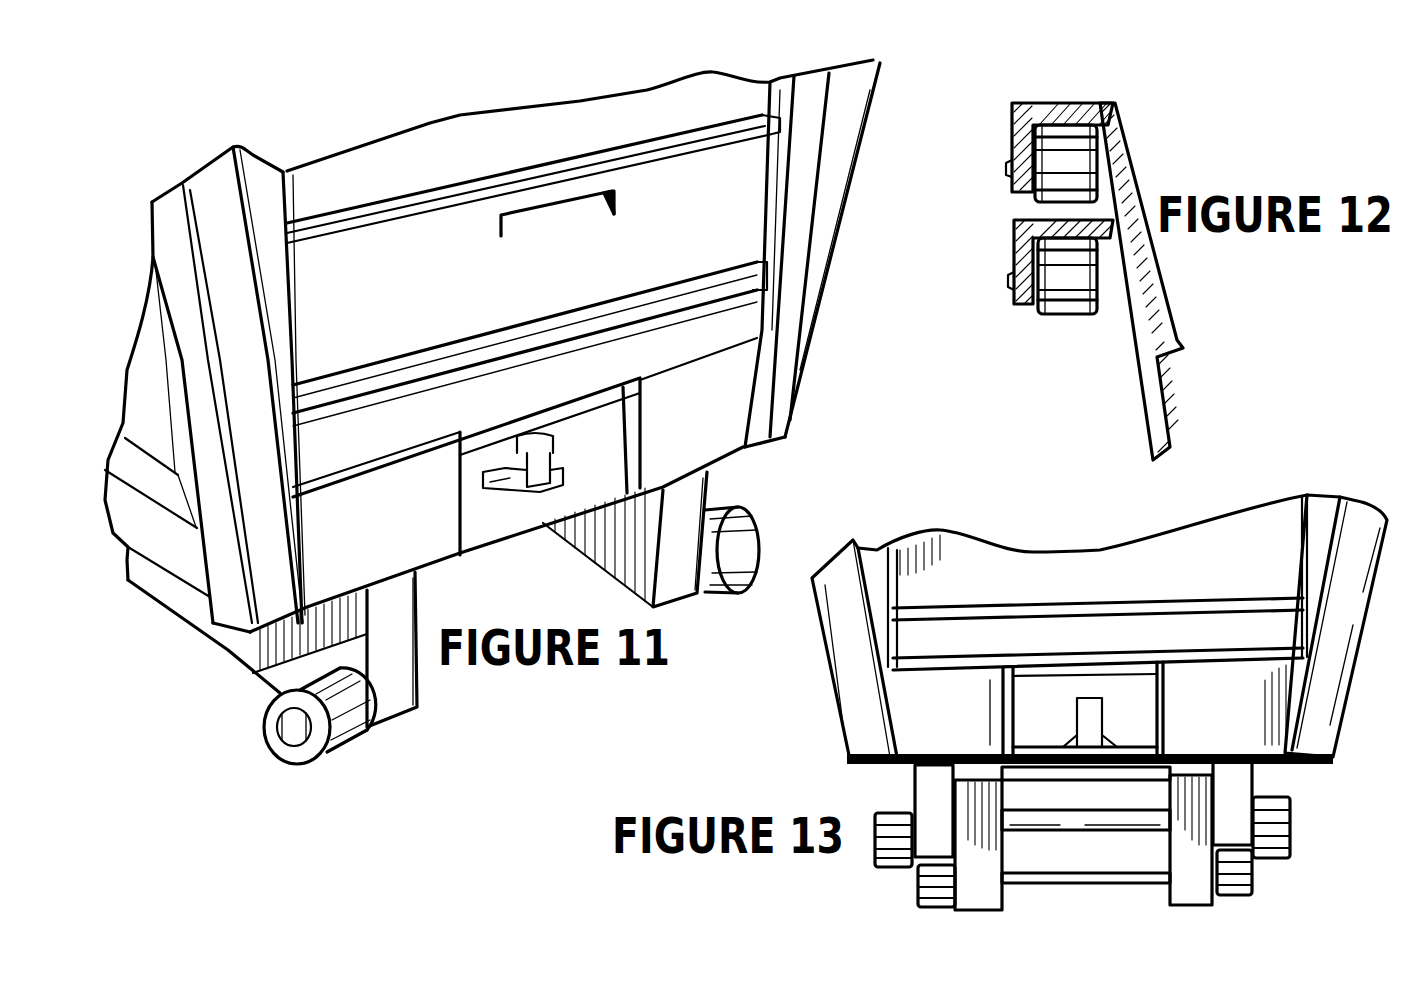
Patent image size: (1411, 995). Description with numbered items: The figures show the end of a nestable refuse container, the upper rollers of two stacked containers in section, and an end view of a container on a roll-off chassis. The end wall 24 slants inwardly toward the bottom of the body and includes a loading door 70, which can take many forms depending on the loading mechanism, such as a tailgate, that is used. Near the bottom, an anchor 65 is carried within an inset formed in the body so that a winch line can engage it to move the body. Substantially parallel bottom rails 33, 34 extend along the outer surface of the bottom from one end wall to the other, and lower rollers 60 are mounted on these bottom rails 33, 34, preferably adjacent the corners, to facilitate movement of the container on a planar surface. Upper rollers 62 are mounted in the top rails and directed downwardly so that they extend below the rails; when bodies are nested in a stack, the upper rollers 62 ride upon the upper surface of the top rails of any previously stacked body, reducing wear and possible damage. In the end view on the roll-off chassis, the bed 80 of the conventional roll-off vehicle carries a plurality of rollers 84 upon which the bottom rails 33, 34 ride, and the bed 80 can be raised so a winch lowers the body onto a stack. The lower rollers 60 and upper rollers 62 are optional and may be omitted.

In FIG. 11, the end wall 24 is at (344, 170).
In FIG. 11, the loading door 70 is at (433, 227).
In FIG. 11, the anchor 65 is at (483, 480).
In FIG. 11, the lower rollers 60 is at (330, 748).
In FIG. 13, the lower rollers 60 is at (873, 870).
In FIG. 12, the upper rollers 62 is at (1050, 183).
In FIG. 13, the bottom rail 33 is at (933, 780).
In FIG. 13, the bottom rail 34 is at (1252, 778).
In FIG. 13, the bed 80 is at (1190, 890).
In FIG. 13, the rollers 84 is at (1252, 890).